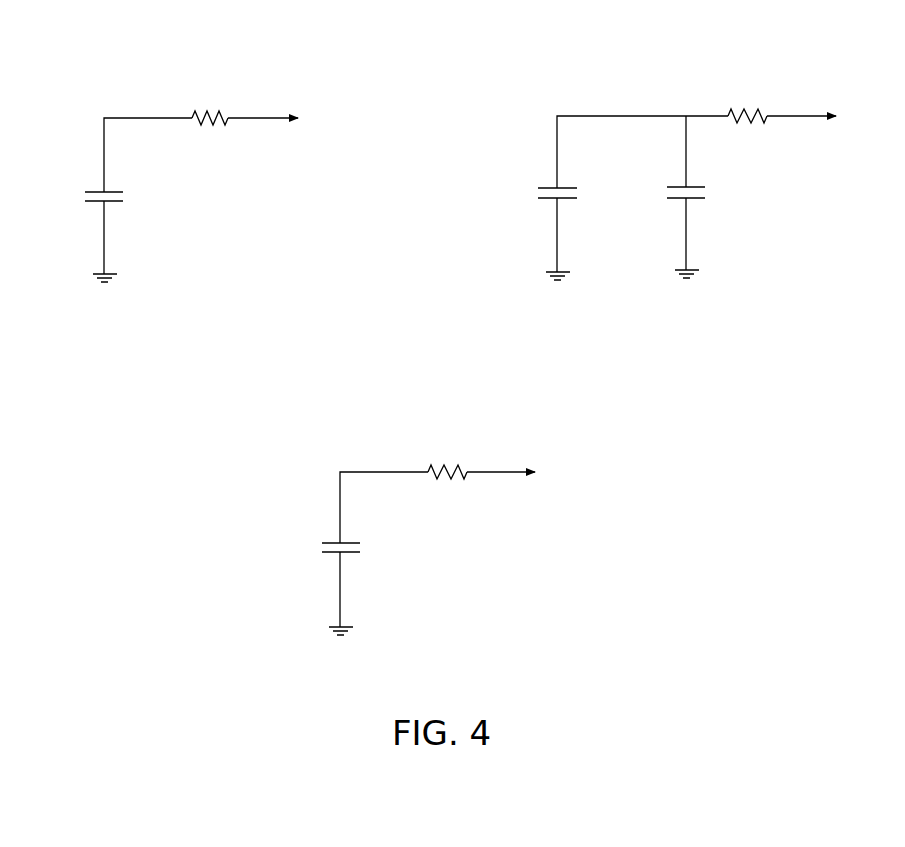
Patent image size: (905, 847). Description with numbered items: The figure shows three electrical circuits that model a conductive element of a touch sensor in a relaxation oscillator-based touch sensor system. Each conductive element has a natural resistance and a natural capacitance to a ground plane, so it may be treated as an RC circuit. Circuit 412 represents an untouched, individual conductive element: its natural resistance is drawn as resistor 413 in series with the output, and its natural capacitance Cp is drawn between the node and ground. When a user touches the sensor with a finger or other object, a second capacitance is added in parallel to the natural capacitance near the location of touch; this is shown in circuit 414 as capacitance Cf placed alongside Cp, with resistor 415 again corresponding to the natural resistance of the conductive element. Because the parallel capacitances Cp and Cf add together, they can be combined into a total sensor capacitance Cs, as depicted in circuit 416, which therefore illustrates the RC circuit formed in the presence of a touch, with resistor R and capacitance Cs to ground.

The circuit 412 is at (66, 65).
The resistor 413 is at (212, 102).
The circuit 414 is at (522, 63).
The resistor 415 is at (750, 102).
The circuit 416 is at (305, 420).